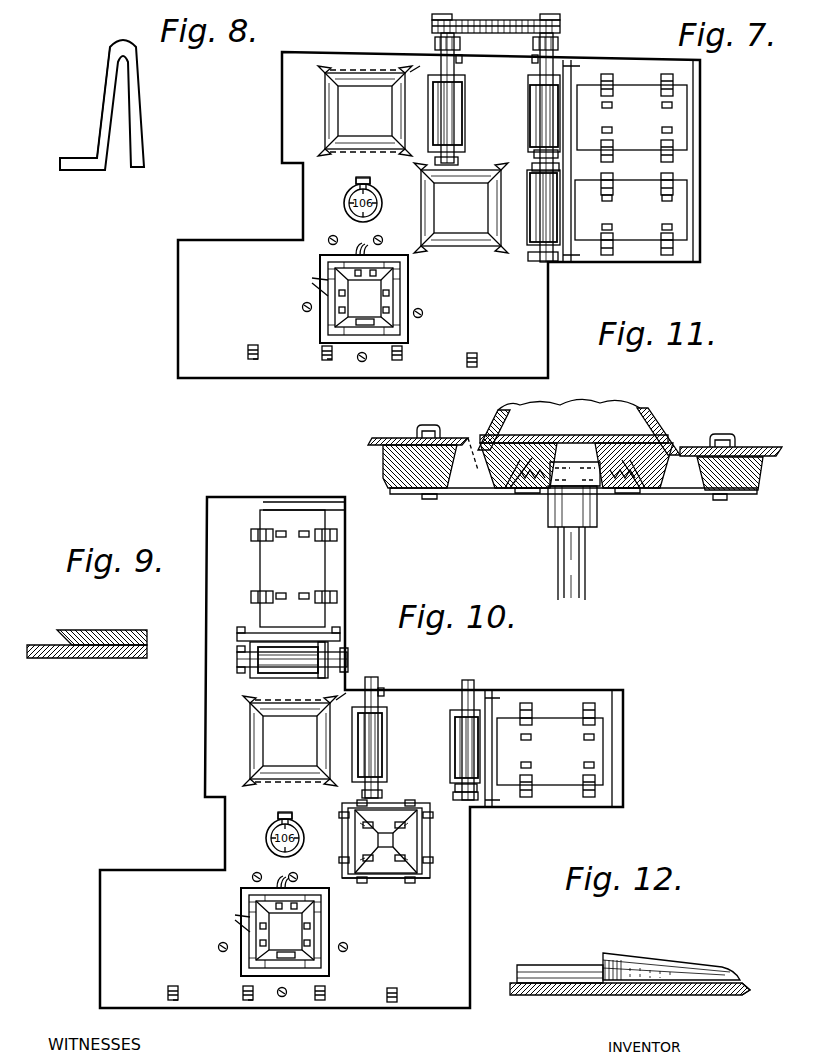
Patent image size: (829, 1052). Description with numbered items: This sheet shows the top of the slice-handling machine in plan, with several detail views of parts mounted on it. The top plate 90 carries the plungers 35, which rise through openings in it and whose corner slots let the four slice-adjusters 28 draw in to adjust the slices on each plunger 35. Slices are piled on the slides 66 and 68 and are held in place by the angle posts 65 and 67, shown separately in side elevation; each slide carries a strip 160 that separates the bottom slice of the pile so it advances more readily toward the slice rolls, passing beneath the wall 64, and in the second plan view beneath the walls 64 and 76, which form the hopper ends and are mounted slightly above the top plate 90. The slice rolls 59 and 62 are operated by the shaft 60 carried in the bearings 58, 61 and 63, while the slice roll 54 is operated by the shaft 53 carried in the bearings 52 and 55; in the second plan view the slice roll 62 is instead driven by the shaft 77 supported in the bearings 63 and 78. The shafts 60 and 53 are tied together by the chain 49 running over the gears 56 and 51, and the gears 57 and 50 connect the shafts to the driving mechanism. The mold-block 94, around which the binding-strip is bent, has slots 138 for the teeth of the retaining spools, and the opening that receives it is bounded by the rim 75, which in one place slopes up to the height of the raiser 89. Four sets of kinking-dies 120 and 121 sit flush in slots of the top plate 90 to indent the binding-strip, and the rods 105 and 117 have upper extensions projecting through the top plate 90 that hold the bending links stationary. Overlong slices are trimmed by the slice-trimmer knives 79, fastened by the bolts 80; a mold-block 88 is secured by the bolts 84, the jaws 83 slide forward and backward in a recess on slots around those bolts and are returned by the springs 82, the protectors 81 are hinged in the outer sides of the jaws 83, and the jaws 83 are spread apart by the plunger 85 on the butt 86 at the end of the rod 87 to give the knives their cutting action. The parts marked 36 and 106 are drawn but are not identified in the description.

In FIG. 7, the slice-adjusters 28 is at (500, 255).
In FIG. 10, the slice-adjusters 28 is at (290, 743).
In FIG. 7, the plungers 35 is at (413, 159).
In FIG. 10, the plungers 35 is at (290, 741).
In FIG. 7, the tab 36 is at (356, 182).
In FIG. 10, the tab 36 is at (278, 816).
In FIG. 7, the chain 49 is at (435, 20).
In FIG. 7, the gear 50 is at (462, 44).
In FIG. 7, the gear 51 is at (430, 27).
In FIG. 7, the bearing 52 is at (462, 63).
In FIG. 10, the bearing 52 is at (398, 691).
In FIG. 7, the shaft 53 is at (421, 65).
In FIG. 10, the shaft 53 is at (342, 694).
In FIG. 7, the slice roll 54 is at (462, 110).
In FIG. 10, the slice roll 54 is at (384, 744).
In FIG. 7, the bearing 55 is at (460, 160).
In FIG. 10, the bearing 55 is at (384, 790).
In FIG. 7, the gear 56 is at (565, 25).
In FIG. 7, the gear 57 is at (560, 44).
In FIG. 7, the bearing 58 is at (530, 62).
In FIG. 10, the bearing 58 is at (460, 688).
In FIG. 7, the slice roll 59 is at (532, 116).
In FIG. 10, the slice roll 59 is at (456, 737).
In FIG. 7, the shaft 60 is at (532, 153).
In FIG. 10, the shaft 60 is at (455, 787).
In FIG. 7, the bearing 61 is at (530, 166).
In FIG. 10, the bearing 61 is at (455, 800).
In FIG. 7, the slice roll 62 is at (532, 202).
In FIG. 10, the slice roll 62 is at (290, 672).
In FIG. 7, the bearing 63 is at (528, 255).
In FIG. 10, the bearing 63 is at (332, 676).
In FIG. 7, the wall 64 is at (572, 82).
In FIG. 10, the wall 64 is at (494, 710).
In FIG. 8, the angle posts 65 is at (141, 105).
In FIG. 7, the angle posts 65 is at (614, 78).
In FIG. 10, the angle posts 65 is at (533, 708).
In FIG. 7, the slide 66 is at (632, 117).
In FIG. 10, the slide 66 is at (550, 751).
In FIG. 8, the angle posts 67 is at (143, 102).
In FIG. 7, the angle posts 67 is at (635, 214).
In FIG. 10, the angle posts 67 is at (250, 543).
In FIG. 7, the slide 68 is at (631, 210).
In FIG. 10, the slide 68 is at (292, 568).
In FIG. 7, the rim 75 is at (409, 298).
In FIG. 9, the rim 75 is at (100, 630).
In FIG. 10, the rim 75 is at (331, 930).
In FIG. 12, the rim 75 is at (548, 965).
In FIG. 10, the wall 76 is at (245, 630).
In FIG. 10, the shaft 77 is at (237, 656).
In FIG. 10, the bearing 78 is at (240, 672).
In FIG. 11, the slice-trimmer knives 79 is at (412, 438).
In FIG. 10, the slice-trimmer knives 79 is at (355, 810).
In FIG. 11, the bolts 80 is at (425, 499).
In FIG. 11, the protectors 81 is at (672, 480).
In FIG. 11, the springs 82 is at (495, 490).
In FIG. 11, the jaws 83 is at (538, 490).
In FIG. 10, the jaws 83 is at (342, 810).
In FIG. 11, the bolts 84 is at (520, 494).
In FIG. 10, the bolts 84 is at (348, 826).
In FIG. 11, the plunger 85 is at (575, 474).
In FIG. 10, the plunger 85 is at (432, 875).
In FIG. 11, the butt 86 is at (572, 506).
In FIG. 11, the rod 87 is at (518, 506).
In FIG. 11, the mold-block 88 is at (652, 416).
In FIG. 7, the raiser 89 is at (348, 252).
In FIG. 10, the raiser 89 is at (268, 886).
In FIG. 12, the raiser 89 is at (680, 996).
In FIG. 7, the top plate 90 is at (363, 349).
In FIG. 11, the top plate 90 is at (382, 447).
In FIG. 9, the top plate 90 is at (45, 660).
In FIG. 10, the top plate 90 is at (285, 982).
In FIG. 12, the top plate 90 is at (585, 996).
In FIG. 7, the mold-block 94 is at (364, 299).
In FIG. 10, the mold-block 94 is at (285, 932).
In FIG. 7, the rods 105 is at (365, 308).
In FIG. 10, the rods 105 is at (218, 948).
In FIG. 7, the dial 106 is at (363, 199).
In FIG. 10, the dial 106 is at (285, 834).
In FIG. 7, the rods 117 is at (388, 241).
In FIG. 10, the rods 117 is at (304, 878).
In FIG. 7, the kinking-die 120 is at (250, 348).
In FIG. 10, the kinking-die 120 is at (404, 990).
In FIG. 7, the kinking-die 121 is at (248, 358).
In FIG. 10, the kinking-die 121 is at (168, 996).
In FIG. 7, the slots 138 is at (306, 281).
In FIG. 10, the slots 138 is at (228, 920).
In FIG. 7, the strip 160 is at (694, 162).
In FIG. 10, the strip 160 is at (292, 502).